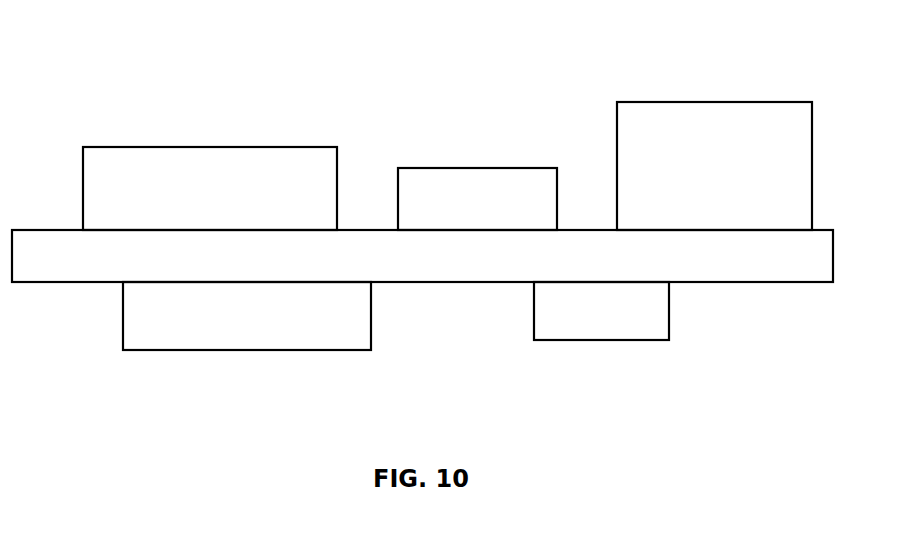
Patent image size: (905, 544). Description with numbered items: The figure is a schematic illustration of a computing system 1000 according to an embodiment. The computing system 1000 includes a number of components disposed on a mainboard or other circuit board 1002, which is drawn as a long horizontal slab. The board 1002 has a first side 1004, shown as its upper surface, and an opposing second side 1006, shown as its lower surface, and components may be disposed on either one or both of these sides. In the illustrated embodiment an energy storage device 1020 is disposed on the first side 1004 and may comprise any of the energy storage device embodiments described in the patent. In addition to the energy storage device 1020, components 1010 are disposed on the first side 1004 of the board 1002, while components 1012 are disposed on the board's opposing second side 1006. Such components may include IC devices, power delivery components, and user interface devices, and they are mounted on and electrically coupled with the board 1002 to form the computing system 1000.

The computing system 1000 is at (422, 258).
The circuit board 1002 is at (422, 256).
The first side 1004 is at (370, 230).
The second side 1006 is at (443, 282).
The components 1010 is at (430, 192).
The components 1012 is at (247, 315).
The energy storage device 1020 is at (210, 188).